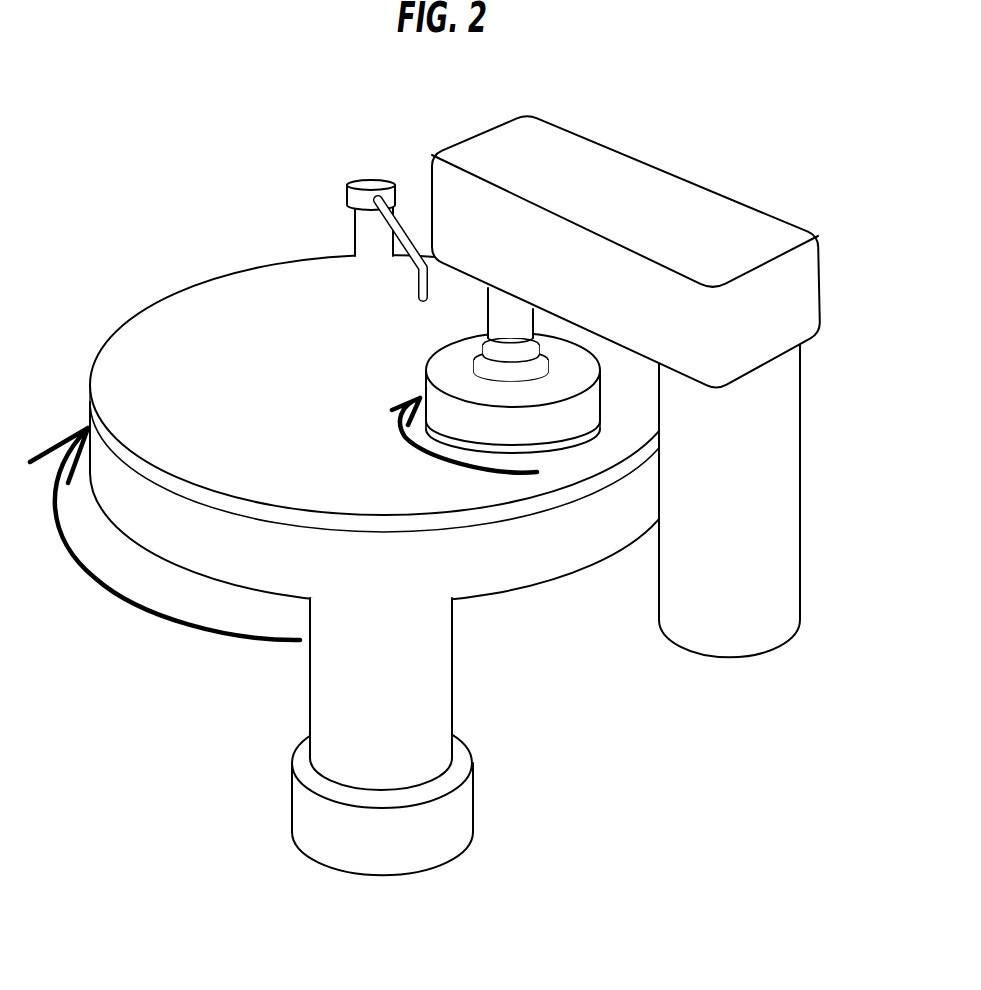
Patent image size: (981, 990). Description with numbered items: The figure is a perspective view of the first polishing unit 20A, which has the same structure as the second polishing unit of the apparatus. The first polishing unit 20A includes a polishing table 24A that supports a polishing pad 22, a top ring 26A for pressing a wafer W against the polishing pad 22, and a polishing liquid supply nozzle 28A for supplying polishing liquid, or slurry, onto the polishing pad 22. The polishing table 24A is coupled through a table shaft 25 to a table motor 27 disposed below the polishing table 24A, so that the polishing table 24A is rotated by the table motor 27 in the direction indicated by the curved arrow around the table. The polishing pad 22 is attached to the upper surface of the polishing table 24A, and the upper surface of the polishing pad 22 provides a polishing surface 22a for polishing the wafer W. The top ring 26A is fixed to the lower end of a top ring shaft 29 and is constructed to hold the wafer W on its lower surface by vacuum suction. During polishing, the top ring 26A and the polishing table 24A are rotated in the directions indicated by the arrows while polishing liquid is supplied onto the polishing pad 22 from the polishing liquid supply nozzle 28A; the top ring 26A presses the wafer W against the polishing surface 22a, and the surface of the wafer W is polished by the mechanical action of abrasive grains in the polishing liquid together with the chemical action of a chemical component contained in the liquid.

The first polishing unit 20A is at (425, 474).
The polishing pad 22 is at (384, 401).
The polishing surface 22a is at (187, 303).
The polishing table 24A is at (522, 562).
The table shaft 25 is at (310, 690).
The table motor 27 is at (293, 806).
The top ring 26A is at (426, 388).
The wafer W is at (580, 440).
The top ring shaft 29 is at (488, 303).
The polishing liquid supply nozzle 28A is at (427, 258).